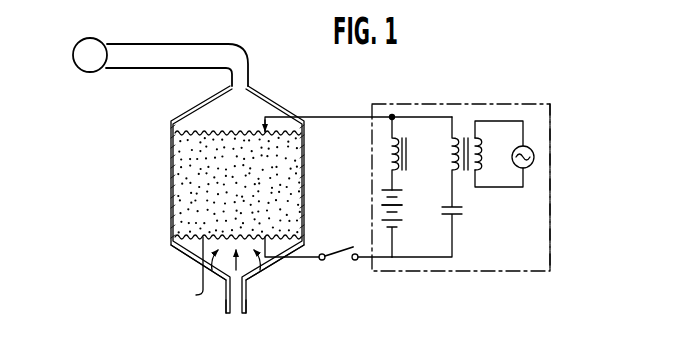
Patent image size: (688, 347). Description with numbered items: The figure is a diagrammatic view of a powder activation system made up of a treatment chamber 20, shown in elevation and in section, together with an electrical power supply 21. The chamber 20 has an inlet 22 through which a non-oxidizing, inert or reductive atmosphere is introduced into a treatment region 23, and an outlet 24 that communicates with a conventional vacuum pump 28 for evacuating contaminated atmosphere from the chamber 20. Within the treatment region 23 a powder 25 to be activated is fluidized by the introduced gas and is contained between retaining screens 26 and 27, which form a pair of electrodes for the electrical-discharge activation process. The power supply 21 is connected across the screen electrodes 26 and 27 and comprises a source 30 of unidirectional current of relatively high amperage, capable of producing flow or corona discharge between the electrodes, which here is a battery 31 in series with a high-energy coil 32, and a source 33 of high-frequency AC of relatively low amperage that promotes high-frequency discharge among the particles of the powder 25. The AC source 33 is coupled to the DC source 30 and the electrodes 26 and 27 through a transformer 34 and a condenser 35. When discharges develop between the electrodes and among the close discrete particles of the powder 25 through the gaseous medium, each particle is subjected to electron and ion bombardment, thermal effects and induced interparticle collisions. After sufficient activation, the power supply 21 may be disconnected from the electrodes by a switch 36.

The treatment chamber 20 is at (170, 160).
The power supply 21 is at (439, 102).
The inlet 22 is at (246, 305).
The treatment region 23 is at (186, 245).
The outlet 24 is at (138, 44).
The powder 25 is at (198, 188).
The retaining screen 26 is at (247, 130).
The retaining screen 27 is at (214, 271).
The vacuum pump 28 is at (73, 50).
The source of unidirectional current 30 is at (370, 193).
The battery 31 is at (396, 207).
The high-energy coil 32 is at (391, 153).
The source of high-frequency AC 33 is at (541, 183).
The transformer 34 is at (477, 160).
The condenser 35 is at (465, 213).
The switch 36 is at (342, 262).